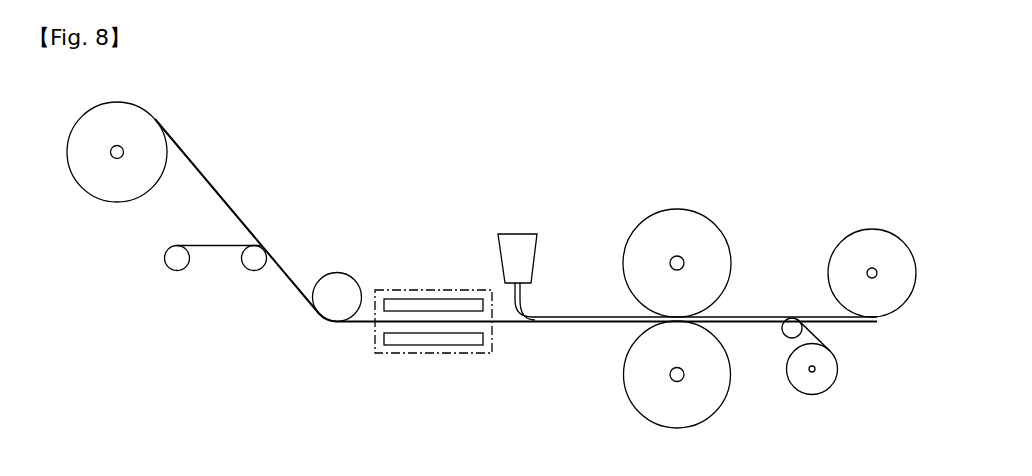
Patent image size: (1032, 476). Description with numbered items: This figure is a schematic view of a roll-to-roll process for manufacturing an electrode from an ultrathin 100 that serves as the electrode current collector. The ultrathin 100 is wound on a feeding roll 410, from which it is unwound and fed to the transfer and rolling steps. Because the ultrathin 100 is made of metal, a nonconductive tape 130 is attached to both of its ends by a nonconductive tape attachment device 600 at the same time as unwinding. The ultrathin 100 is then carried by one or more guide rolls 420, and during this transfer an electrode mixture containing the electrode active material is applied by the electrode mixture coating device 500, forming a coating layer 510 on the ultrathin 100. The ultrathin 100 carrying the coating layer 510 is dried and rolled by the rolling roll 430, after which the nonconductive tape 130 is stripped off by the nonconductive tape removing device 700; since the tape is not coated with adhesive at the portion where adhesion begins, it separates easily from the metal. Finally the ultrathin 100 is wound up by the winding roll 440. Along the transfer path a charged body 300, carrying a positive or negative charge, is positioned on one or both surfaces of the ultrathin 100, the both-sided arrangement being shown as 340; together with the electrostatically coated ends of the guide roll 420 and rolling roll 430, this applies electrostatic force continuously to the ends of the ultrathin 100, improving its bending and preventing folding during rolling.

The ultrathin 100 is at (237, 215).
The nonconductive tape 130 is at (217, 247).
The charged body 300 is at (433, 303).
The charged body on both sides of the ultrathin 340 is at (455, 353).
The feeding roll 410 is at (102, 193).
The guide roll 420 is at (335, 278).
The rolling roll 430 is at (682, 217).
The winding roll 440 is at (853, 238).
The electrode mixture coating device 500 is at (518, 238).
The coating layer 510 is at (568, 320).
The nonconductive tape attachment device 600 is at (255, 265).
The nonconductive tape removing device 700 is at (812, 387).